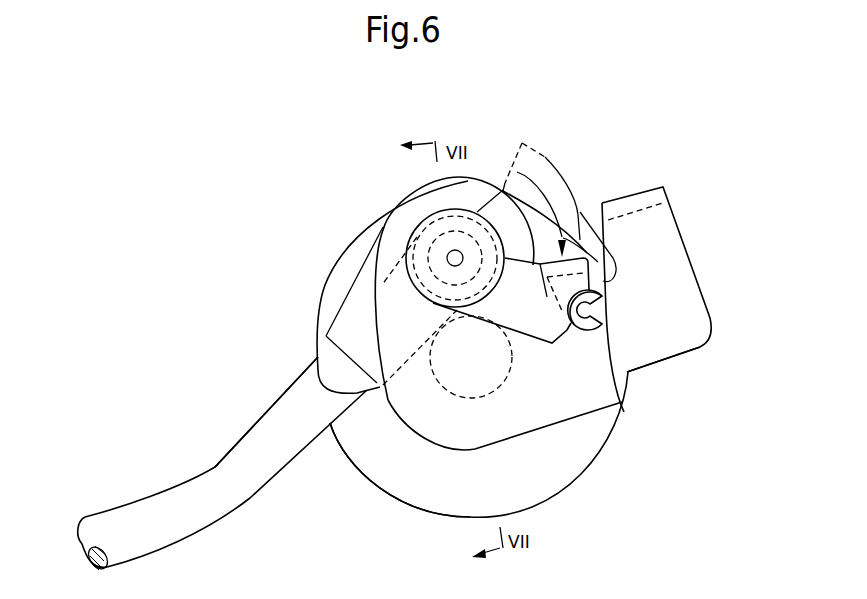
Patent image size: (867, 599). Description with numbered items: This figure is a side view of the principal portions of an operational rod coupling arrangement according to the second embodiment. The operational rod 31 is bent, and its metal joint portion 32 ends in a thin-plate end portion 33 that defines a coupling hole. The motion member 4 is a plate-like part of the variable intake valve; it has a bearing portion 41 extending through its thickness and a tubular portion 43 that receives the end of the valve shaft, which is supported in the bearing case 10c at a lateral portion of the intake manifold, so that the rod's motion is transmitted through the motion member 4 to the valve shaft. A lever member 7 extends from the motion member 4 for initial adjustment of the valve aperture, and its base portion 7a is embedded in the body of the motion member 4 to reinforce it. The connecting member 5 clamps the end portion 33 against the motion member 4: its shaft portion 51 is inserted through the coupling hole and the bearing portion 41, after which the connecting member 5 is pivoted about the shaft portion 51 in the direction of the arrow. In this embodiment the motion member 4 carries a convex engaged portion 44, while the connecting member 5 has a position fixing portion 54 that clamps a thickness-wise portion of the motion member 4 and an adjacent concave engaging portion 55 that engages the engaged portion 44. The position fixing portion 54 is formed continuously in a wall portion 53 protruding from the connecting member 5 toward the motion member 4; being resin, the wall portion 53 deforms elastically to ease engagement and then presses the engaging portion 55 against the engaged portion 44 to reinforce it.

The motion member 4 is at (543, 430).
The connecting member 5 is at (428, 212).
The lever member 7 is at (633, 197).
The base portion 7a is at (628, 370).
The bearing case 10c is at (370, 465).
The operational rod 31 is at (266, 412).
The joint portion 32 is at (197, 477).
The end portion 33 is at (360, 310).
The bearing portion 41 is at (439, 258).
The tubular portion 43 is at (470, 398).
The convex engaged portion 44 is at (583, 333).
The shaft portion 51 is at (415, 238).
The wall portion 53 is at (530, 330).
The position fixing portion 54 is at (533, 158).
The concave engaging portion 55 is at (549, 182).